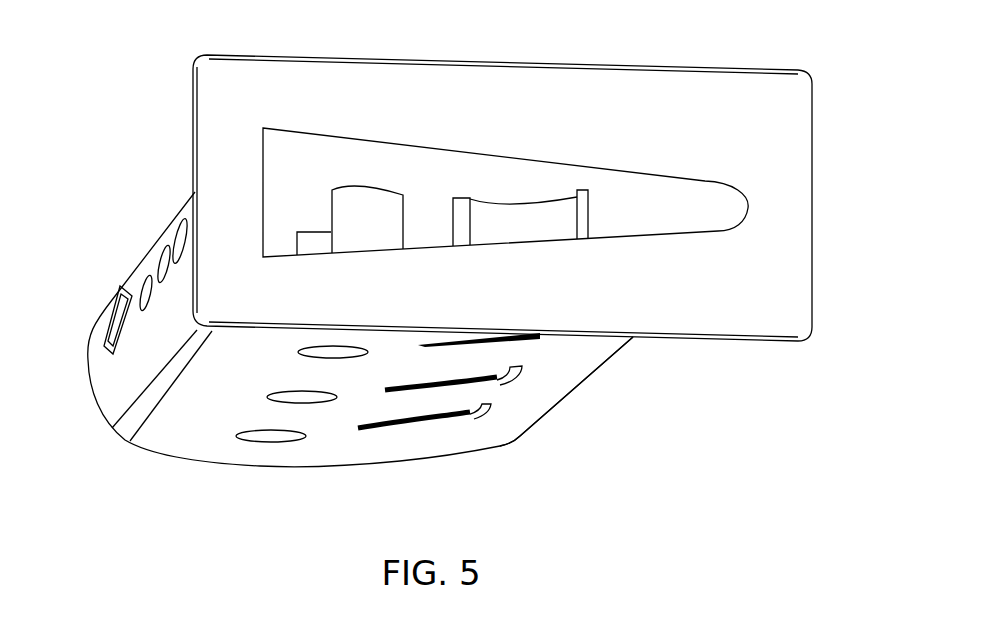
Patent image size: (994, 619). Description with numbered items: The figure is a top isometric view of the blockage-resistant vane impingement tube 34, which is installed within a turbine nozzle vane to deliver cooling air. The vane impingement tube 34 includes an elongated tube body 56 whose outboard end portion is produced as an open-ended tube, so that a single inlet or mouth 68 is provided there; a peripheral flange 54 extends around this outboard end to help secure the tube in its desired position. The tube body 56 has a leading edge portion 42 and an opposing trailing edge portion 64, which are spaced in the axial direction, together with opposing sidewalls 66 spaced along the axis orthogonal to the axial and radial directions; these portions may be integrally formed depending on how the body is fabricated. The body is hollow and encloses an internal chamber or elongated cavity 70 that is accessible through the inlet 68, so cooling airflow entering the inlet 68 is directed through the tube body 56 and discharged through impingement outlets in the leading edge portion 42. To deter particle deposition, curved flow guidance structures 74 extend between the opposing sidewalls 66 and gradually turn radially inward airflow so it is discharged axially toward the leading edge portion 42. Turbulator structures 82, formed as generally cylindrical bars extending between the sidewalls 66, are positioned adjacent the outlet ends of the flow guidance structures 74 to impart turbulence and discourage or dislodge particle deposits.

The vane impingement tube 34 is at (96, 194).
The leading edge portion 42 is at (131, 273).
The peripheral flange 54 is at (744, 70).
The elongated tube body 56 is at (591, 389).
The trailing edge portion 64 is at (506, 447).
The opposing sidewalls 66 is at (572, 372).
The inlet 68 is at (708, 185).
The elongated cavity 70 is at (653, 218).
The curved flow guidance structures 74 is at (517, 204).
The turbulator structures 82 is at (313, 231).